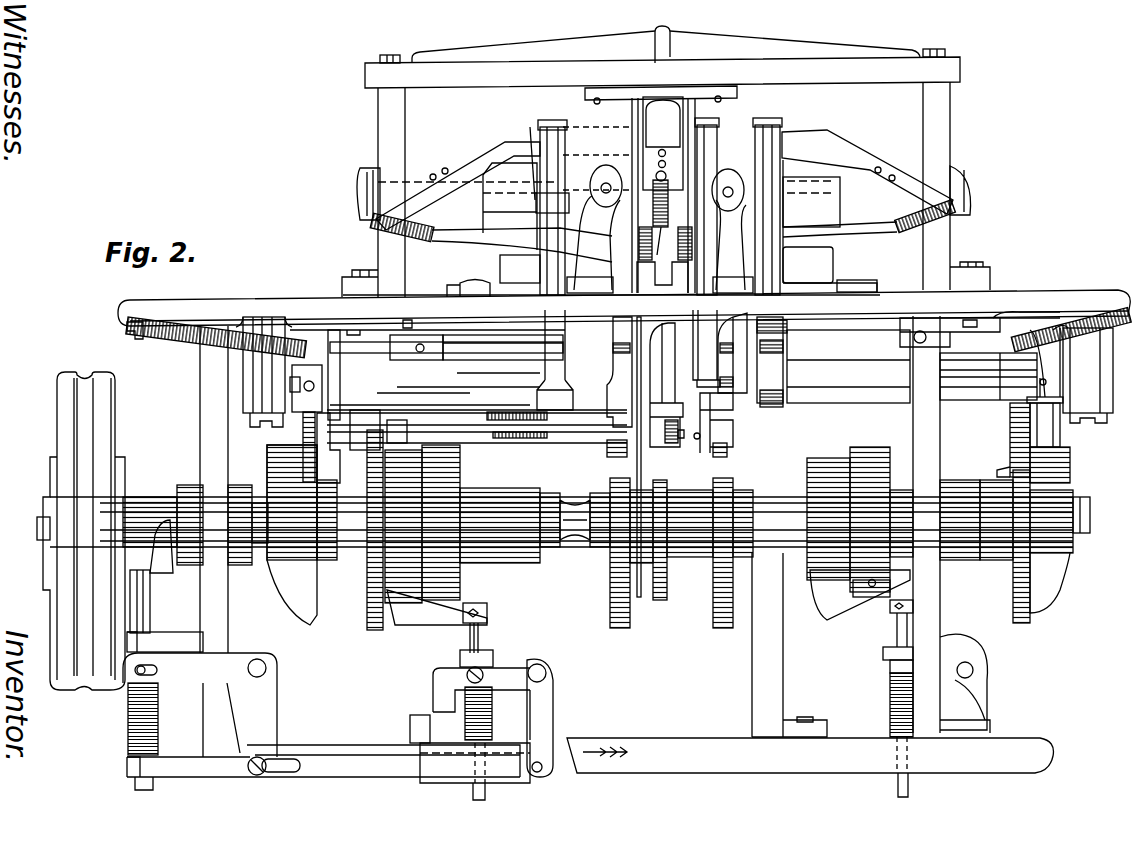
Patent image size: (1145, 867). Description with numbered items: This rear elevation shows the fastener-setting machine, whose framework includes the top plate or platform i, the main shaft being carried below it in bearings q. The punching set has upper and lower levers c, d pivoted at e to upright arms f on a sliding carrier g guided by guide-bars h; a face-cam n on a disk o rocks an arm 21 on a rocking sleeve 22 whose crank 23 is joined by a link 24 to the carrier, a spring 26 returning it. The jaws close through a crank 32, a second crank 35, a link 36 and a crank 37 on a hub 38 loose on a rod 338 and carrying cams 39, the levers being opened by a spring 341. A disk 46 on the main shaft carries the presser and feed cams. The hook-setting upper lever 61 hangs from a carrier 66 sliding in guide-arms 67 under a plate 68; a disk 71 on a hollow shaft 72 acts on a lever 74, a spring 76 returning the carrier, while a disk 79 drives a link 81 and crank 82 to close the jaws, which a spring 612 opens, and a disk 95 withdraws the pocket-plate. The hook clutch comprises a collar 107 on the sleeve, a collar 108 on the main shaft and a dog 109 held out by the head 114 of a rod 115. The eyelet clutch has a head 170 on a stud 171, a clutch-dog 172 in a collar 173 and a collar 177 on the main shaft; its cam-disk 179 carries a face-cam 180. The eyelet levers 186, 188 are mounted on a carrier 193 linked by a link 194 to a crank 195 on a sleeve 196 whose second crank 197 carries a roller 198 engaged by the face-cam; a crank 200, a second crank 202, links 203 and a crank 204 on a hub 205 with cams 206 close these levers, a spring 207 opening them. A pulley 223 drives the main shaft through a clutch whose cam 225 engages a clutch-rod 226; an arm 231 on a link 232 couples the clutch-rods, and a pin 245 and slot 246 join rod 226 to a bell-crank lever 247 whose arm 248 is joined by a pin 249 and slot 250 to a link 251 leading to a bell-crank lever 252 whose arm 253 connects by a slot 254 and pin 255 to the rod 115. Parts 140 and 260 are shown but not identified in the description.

The arm 21 is at (292, 418).
The rocking sleeve 22 is at (264, 372).
The second arm or crank 23 is at (358, 355).
The link 24 is at (484, 332).
The spring 26 is at (172, 342).
The crank or arm 32 is at (325, 447).
The second crank or arm 35 is at (567, 370).
The link 36 is at (540, 262).
The crank 37 is at (550, 126).
The hub or sleeve 38 is at (466, 206).
The cams or arms 39 is at (528, 126).
The disk 46 is at (367, 617).
The upper jaw or lever 61 is at (663, 143).
The carrier 66 is at (660, 96).
The guide-arms 67 is at (598, 96).
The plate 68 is at (662, 57).
The disk 71 is at (630, 617).
The sleeve or hollow shaft 72 is at (575, 547).
The lever 74 is at (637, 467).
The spring 76 is at (612, 348).
The disk 79 is at (712, 617).
The link 81 is at (732, 231).
The crank 82 is at (706, 134).
The disk 95 is at (668, 596).
The collar 107 is at (460, 453).
The collar 108 is at (398, 470).
The connecting dog or lever 109 is at (405, 622).
The head 114 is at (463, 617).
The rod 115 is at (470, 640).
The sleeve 140 is at (520, 434).
The head 170 is at (890, 610).
The stud or rod 171 is at (897, 636).
The clutch-dog 172 is at (860, 595).
The collar 173 is at (863, 447).
The collar 177 is at (817, 458).
The cam-disk 179 is at (1013, 585).
The face-cam 180 is at (1048, 590).
The upper jaw or lever 186 is at (872, 154).
The lower jaw or lever 188 is at (868, 238).
The reciprocating carrier 193 is at (806, 290).
The link 194 is at (902, 318).
The crank 195 is at (1012, 322).
The hollow rock-shaft or sleeve 196 is at (1071, 365).
The second crank or arm 197 is at (1062, 418).
The stud or roller 198 is at (1062, 445).
The crank 200 is at (1001, 440).
The second crank 202 is at (786, 351).
The links 203 is at (784, 258).
The crank 204 is at (785, 124).
The hub 205 is at (840, 200).
The cams or arms 206 is at (830, 140).
The spring 207 is at (935, 228).
The pulley 223 is at (57, 432).
The cam 225 is at (170, 575).
The clutch-rod 226 is at (152, 613).
The arm or projection 231 is at (408, 722).
The link or bar 232 is at (518, 780).
The pin 245 is at (135, 670).
The slot 246 is at (164, 667).
The second bell-crank lever 247 is at (210, 680).
The arm 248 is at (272, 686).
The pin 249 is at (245, 777).
The slot 250 is at (278, 775).
The link 251 is at (350, 780).
The bell-crank lever 252 is at (553, 720).
The arm 253 is at (533, 662).
The slot 254 is at (484, 675).
The pin 255 is at (487, 654).
The bar 260 is at (810, 756).
The rod 338 is at (358, 190).
The spring 341 is at (397, 238).
The spring 612 is at (664, 232).
The upper jaw lever c is at (500, 146).
The lower jaw lever d is at (457, 230).
The pivot e is at (606, 184).
The upright arms f is at (597, 210).
The sliding carrier g is at (476, 285).
The guide-bars h is at (452, 293).
The top plate or platform i is at (1060, 292).
The face-cam n is at (280, 605).
The disk o is at (312, 586).
The bearings q is at (490, 492).